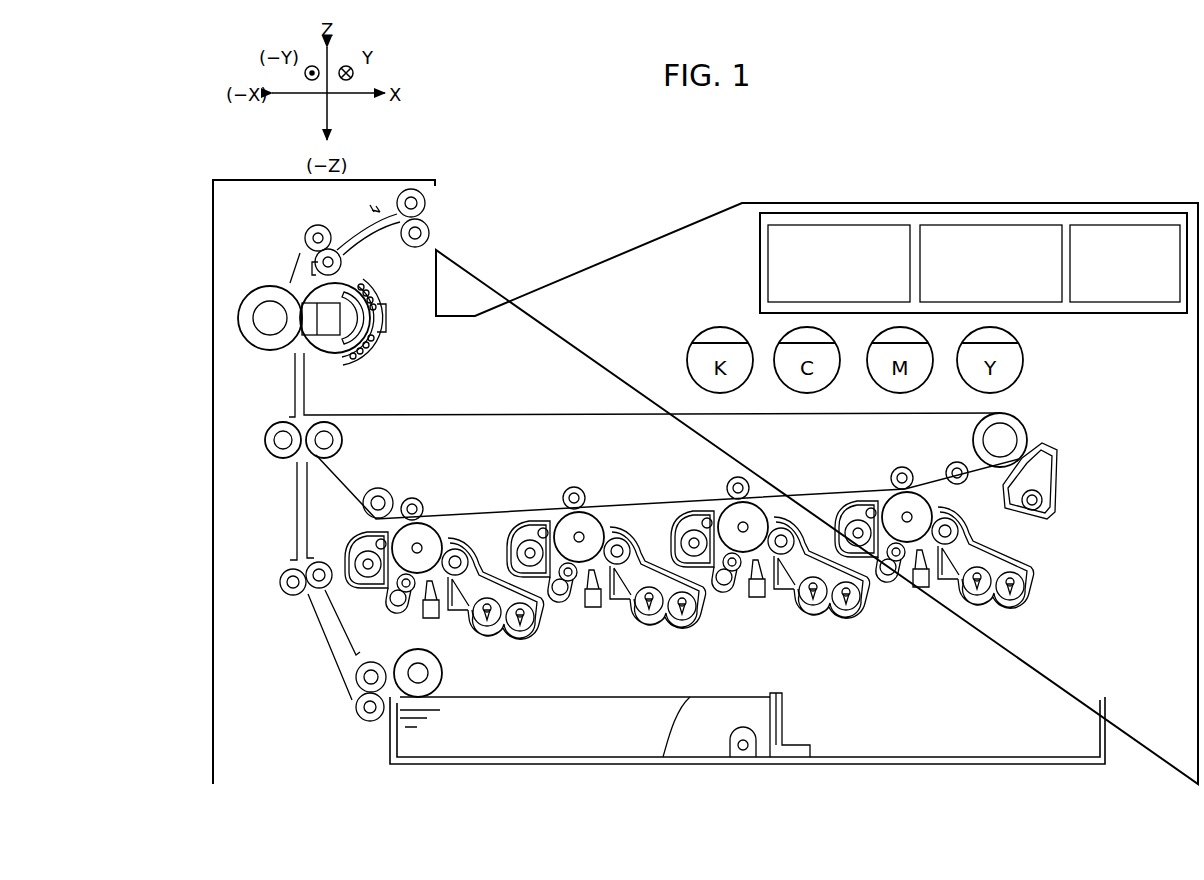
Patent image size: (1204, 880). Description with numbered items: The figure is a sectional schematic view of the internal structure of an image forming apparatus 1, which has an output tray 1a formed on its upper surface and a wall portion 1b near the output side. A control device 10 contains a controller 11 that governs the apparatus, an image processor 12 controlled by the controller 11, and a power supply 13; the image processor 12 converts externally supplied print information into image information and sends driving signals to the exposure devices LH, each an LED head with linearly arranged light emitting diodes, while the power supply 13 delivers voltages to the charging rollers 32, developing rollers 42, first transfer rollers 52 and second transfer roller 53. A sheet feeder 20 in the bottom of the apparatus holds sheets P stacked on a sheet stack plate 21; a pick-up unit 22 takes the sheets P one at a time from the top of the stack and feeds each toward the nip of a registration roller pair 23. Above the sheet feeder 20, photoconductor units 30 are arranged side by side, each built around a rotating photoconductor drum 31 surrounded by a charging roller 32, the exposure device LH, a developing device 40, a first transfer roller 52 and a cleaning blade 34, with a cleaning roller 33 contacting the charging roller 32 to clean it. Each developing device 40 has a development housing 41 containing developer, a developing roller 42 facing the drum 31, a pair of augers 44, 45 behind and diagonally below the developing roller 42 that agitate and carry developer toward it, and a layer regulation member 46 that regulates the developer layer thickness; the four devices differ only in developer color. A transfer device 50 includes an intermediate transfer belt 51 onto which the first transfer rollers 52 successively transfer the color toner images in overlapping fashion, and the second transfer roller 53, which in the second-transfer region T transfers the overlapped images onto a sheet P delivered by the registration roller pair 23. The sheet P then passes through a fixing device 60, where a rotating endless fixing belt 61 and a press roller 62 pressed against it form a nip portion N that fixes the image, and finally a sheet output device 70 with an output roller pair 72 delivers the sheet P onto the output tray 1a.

The image forming apparatus 1 is at (633, 183).
The output tray 1a is at (582, 262).
The discharge opening wall 1b is at (440, 288).
The control device 10 is at (931, 232).
The controller 11 is at (851, 225).
The image processor 12 is at (1007, 225).
The power supply 13 is at (1139, 225).
The sheet feeder 20 is at (747, 708).
The sheet stack plate 21 is at (686, 700).
The pick-up unit 22 is at (350, 710).
The registration roller pair 23 is at (313, 590).
The photoconductor unit 30 is at (704, 551).
The photoconductor drum 31 is at (935, 513).
The charging roller 32 is at (913, 594).
The cleaning roller 33 is at (888, 587).
The cleaning blade 34 is at (856, 507).
The developing device 40 is at (1050, 567).
The development housing 41 is at (1000, 557).
The developing roller 42 is at (974, 529).
The auger 44 is at (987, 605).
The auger 45 is at (1020, 608).
The layer regulation member 46 is at (958, 593).
The transfer device 50 is at (599, 456).
The intermediate transfer belt 51 is at (457, 415).
The first transfer roller 52 is at (902, 470).
The second transfer roller 53 is at (270, 455).
The fixing device 60 is at (386, 348).
The fixing belt 61 is at (322, 354).
The press roller 62 is at (262, 300).
The sheet output device 70 is at (359, 257).
The output roller pair 72 is at (431, 232).
The nip portion N is at (298, 300).
The second-transfer region T is at (283, 413).
The sheet P is at (600, 696).
The exposure device LH is at (936, 620).